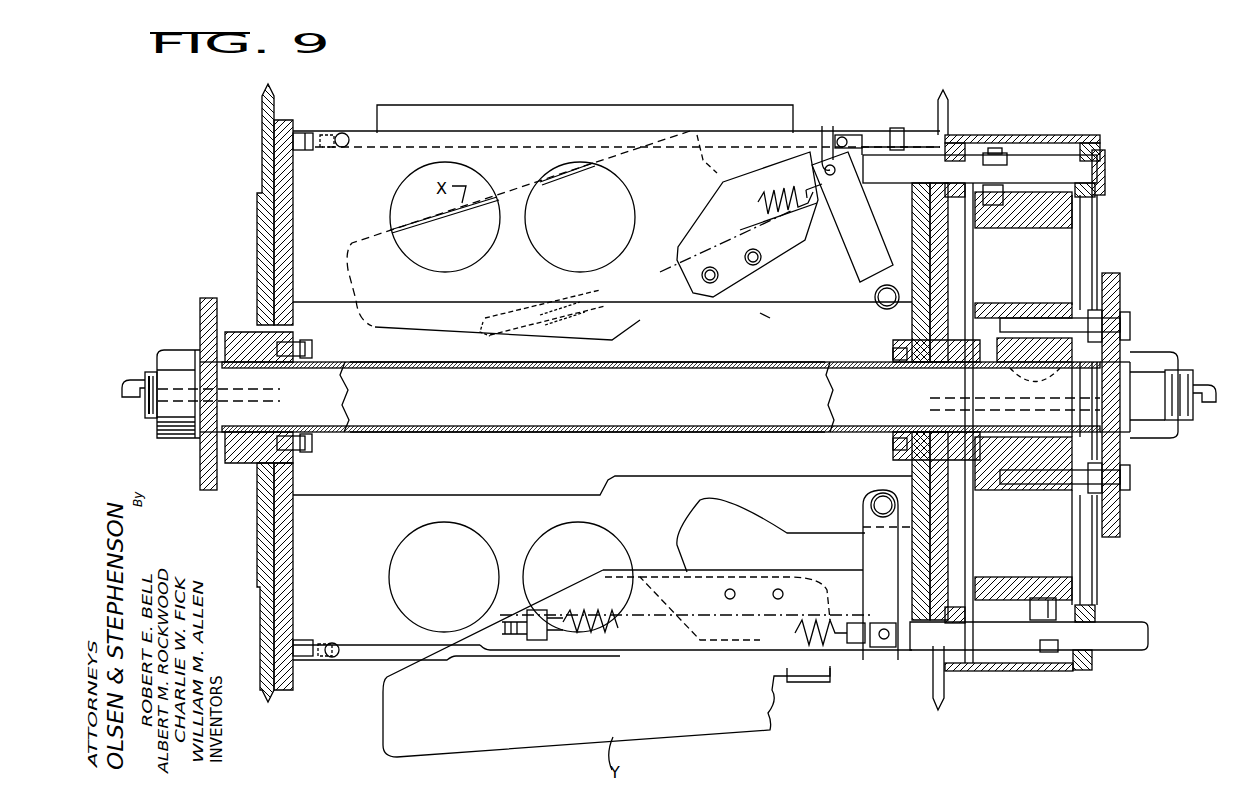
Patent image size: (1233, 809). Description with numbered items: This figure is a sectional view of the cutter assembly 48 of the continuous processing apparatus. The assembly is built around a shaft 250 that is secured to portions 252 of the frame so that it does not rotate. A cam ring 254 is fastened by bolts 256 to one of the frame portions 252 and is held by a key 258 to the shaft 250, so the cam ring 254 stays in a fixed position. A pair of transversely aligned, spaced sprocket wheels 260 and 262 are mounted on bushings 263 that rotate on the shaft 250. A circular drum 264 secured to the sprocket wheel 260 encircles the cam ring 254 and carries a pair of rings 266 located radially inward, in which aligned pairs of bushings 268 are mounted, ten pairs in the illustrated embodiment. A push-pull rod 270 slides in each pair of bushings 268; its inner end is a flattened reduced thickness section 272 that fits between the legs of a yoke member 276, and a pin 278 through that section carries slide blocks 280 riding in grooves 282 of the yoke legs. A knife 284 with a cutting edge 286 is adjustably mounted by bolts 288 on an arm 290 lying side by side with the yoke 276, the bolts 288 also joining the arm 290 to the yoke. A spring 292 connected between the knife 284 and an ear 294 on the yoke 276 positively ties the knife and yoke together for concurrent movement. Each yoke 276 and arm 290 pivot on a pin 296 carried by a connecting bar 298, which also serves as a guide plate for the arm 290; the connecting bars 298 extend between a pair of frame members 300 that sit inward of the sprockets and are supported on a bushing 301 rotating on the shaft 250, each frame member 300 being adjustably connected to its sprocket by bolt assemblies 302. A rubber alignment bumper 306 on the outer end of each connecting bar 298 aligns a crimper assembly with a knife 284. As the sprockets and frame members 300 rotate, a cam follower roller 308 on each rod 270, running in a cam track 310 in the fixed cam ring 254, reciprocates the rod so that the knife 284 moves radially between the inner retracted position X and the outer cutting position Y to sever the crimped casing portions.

The cutter assembly 48 is at (1066, 114).
The shaft 250 is at (882, 419).
The frame portions 252 is at (204, 310).
The cam ring 254 is at (1068, 218).
The bolts 256 is at (1130, 328).
The key 258 is at (1012, 370).
The sprocket wheel 260 is at (948, 118).
The sprocket wheel 262 is at (262, 120).
The bushings 263 is at (270, 366).
The circular drum 264 is at (1042, 140).
The rings 266 is at (966, 150).
The bushings 268 is at (1106, 162).
The push-pull rod 270 is at (1052, 184).
The reduced thickness section 272 is at (878, 152).
The yoke member 276 is at (900, 592).
The pin 278 is at (840, 132).
The slide blocks 280 is at (828, 124).
The grooves 282 is at (836, 218).
The knife 284 is at (376, 318).
The cutting edge 286 is at (376, 218).
The bolts 288 is at (718, 276).
The arm 290 is at (795, 268).
The spring 292 is at (766, 204).
The ear 294 is at (814, 192).
The pin 296 is at (875, 300).
The connecting bar 298 is at (766, 312).
The frame members 300 is at (292, 206).
The bushing 301 is at (443, 430).
The bolt assemblies 302 is at (308, 446).
The alignment bumper 306 is at (617, 106).
The cam follower roller 308 is at (995, 214).
The cam track 310 is at (1050, 597).